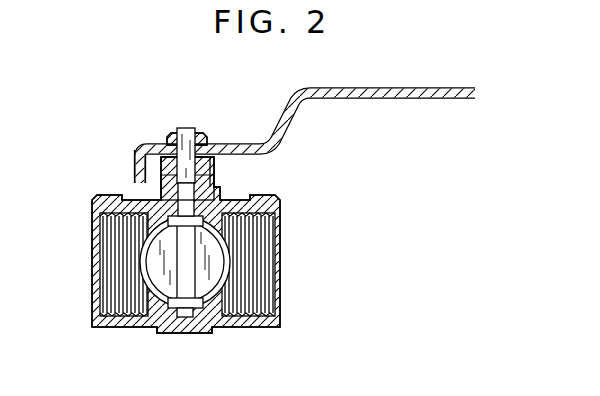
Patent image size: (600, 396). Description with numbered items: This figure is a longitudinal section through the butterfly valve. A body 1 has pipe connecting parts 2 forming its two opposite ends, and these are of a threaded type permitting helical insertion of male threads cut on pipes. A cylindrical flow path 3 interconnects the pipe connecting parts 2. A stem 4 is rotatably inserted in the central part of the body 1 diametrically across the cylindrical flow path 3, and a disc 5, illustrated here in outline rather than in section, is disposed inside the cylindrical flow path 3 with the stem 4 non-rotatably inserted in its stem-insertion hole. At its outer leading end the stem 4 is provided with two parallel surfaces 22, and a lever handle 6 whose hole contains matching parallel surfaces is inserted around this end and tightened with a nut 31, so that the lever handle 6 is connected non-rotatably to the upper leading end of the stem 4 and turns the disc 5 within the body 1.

The body 1 is at (172, 333).
The pipe connecting parts 2 is at (110, 307).
The cylindrical flow path 3 is at (228, 327).
The stem 4 is at (209, 194).
The disc 5 is at (212, 262).
The lever handle 6 is at (381, 99).
The two parallel surfaces 22 is at (173, 143).
The nut 31 is at (177, 140).